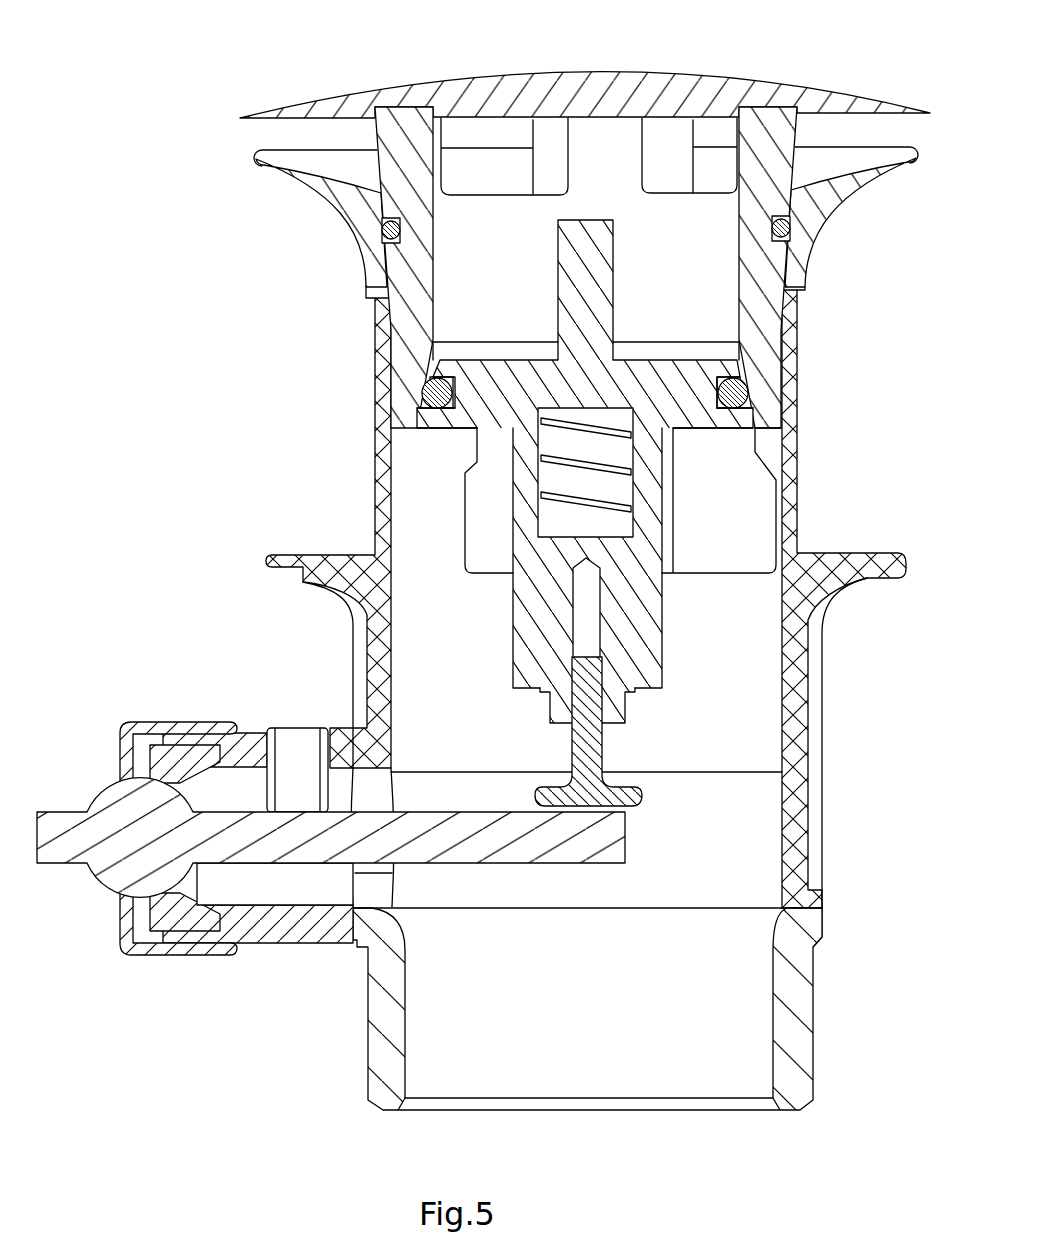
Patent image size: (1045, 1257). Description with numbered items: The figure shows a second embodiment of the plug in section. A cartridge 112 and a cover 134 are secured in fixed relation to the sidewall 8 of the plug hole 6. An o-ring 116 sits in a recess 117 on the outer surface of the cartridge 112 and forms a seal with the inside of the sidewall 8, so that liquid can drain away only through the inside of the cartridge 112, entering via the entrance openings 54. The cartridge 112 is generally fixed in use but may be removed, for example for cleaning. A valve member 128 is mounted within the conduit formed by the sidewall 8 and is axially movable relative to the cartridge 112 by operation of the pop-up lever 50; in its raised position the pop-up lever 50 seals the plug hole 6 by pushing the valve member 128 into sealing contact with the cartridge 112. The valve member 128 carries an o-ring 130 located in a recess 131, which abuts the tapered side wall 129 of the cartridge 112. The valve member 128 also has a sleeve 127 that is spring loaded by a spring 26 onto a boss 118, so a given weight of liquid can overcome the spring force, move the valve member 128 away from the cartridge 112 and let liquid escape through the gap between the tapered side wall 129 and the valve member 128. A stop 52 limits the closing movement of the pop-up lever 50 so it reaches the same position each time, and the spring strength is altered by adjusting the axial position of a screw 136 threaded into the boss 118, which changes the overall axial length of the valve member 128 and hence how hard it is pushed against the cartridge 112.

The cover 134 is at (657, 98).
The entrance openings 54 is at (493, 133).
The plug hole 6 is at (822, 155).
The sidewall 8 is at (828, 180).
The cartridge 112 is at (405, 158).
The o-ring 116 is at (380, 238).
The recess 117 is at (386, 246).
The tapered side wall 129 is at (745, 352).
The o-ring 130 is at (750, 392).
The recess 131 is at (743, 418).
The valve member 128 is at (488, 400).
The spring 26 is at (600, 507).
The sleeve 127 is at (647, 608).
The boss 118 is at (620, 672).
The screw 136 is at (572, 750).
The stop 52 is at (290, 752).
The pop-up lever 50 is at (462, 848).